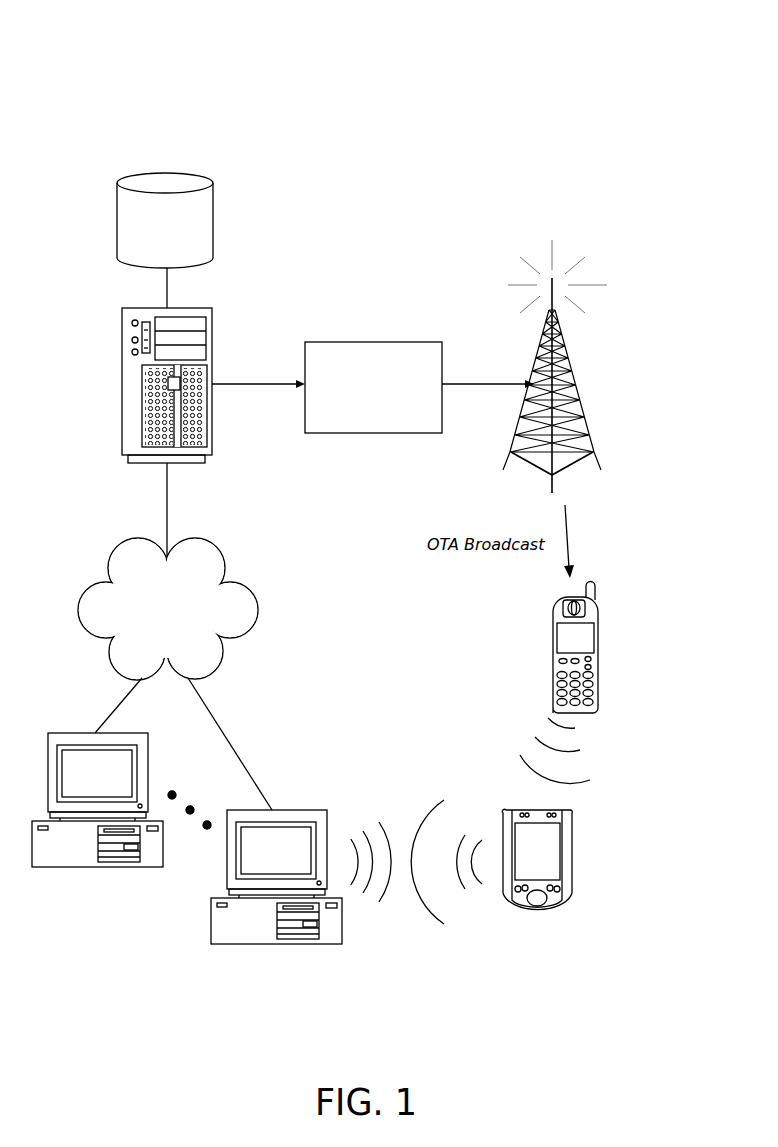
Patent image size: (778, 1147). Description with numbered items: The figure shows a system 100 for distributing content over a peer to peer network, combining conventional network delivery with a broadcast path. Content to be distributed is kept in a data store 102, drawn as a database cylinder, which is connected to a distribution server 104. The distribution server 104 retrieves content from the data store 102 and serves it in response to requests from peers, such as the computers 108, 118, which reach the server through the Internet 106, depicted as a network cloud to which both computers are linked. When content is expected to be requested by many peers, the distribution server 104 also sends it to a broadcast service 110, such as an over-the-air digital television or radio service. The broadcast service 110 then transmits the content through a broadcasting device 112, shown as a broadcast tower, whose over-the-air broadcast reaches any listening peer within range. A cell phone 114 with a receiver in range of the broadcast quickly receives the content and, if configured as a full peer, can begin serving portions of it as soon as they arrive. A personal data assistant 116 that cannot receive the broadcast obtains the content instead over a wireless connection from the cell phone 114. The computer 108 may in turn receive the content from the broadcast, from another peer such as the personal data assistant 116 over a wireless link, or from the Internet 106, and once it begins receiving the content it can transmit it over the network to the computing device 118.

The system 100 is at (611, 91).
The data store 102 is at (151, 258).
The distribution server 104 is at (122, 387).
The Internet (P2P network) 106 is at (151, 649).
The computer 108 is at (262, 859).
The broadcast service 110 is at (402, 429).
The broadcasting device 112 is at (592, 452).
The cell phone 114 is at (598, 646).
The personal data assistant (PDA) 116 is at (572, 860).
The computing device 118 is at (81, 782).